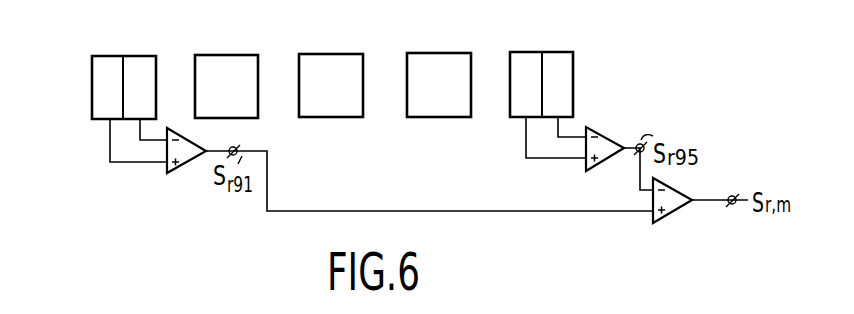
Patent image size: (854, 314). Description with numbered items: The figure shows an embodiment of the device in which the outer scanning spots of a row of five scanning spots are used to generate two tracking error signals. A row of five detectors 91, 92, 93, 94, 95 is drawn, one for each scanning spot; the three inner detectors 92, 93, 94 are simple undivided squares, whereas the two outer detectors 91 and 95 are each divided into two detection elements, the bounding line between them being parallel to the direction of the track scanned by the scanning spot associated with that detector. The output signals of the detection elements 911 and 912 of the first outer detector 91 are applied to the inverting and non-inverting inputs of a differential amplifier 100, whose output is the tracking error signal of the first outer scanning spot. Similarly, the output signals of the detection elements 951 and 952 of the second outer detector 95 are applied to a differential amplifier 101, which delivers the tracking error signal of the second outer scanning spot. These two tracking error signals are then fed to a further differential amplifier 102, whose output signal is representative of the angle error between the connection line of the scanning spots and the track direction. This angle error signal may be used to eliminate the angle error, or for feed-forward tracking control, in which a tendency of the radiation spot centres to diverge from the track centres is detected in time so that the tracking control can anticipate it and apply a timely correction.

The outer detector 91 is at (120, 69).
The detection element 911 is at (96, 85).
The detection element 912 is at (146, 96).
The detector 92 is at (229, 55).
The detector 93 is at (329, 54).
The detector 94 is at (436, 53).
The outer detector 95 is at (545, 67).
The detection element 951 is at (518, 96).
The detection element 952 is at (565, 95).
The differential amplifier 100 is at (178, 171).
The differential amplifier 101 is at (606, 136).
The further differential amplifier 102 is at (677, 212).